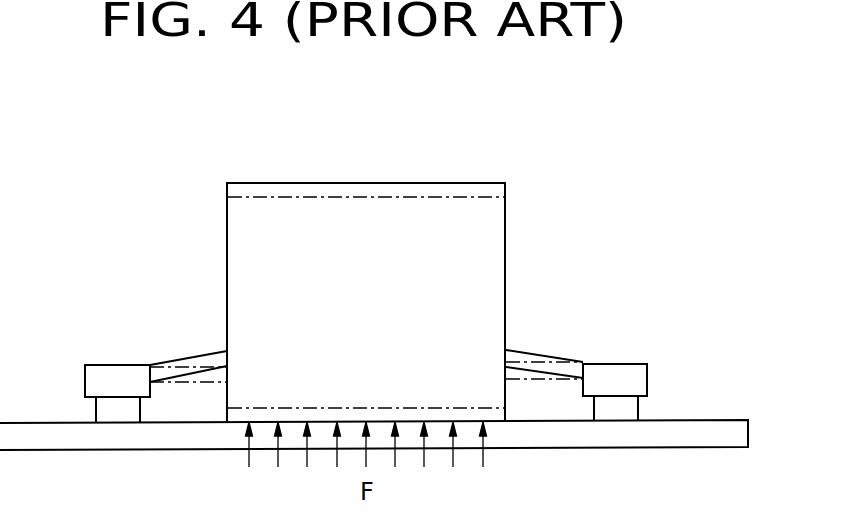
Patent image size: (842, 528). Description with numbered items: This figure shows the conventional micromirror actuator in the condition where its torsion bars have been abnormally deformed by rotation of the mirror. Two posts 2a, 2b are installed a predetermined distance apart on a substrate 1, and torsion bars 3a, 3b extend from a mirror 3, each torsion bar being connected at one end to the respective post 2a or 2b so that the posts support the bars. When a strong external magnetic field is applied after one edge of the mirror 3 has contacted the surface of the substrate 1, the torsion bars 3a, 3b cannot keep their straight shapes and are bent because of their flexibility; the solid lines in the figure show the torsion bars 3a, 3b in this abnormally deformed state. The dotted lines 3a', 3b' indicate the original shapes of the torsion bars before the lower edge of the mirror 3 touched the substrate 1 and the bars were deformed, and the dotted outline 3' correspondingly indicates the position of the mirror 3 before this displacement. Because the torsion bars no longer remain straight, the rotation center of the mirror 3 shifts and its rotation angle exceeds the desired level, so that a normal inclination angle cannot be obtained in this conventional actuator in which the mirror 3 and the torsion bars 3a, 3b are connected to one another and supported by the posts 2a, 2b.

The substrate 1 is at (740, 433).
The post 2a is at (90, 382).
The post 2b is at (642, 378).
The mirror 3 is at (366, 275).
The mass body (original position) 3' is at (366, 268).
The torsion bar 3a is at (188, 335).
The original shape of torsion bar 3a' is at (170, 345).
The torsion bar 3b is at (544, 331).
The original shape of torsion bar 3b' is at (561, 341).